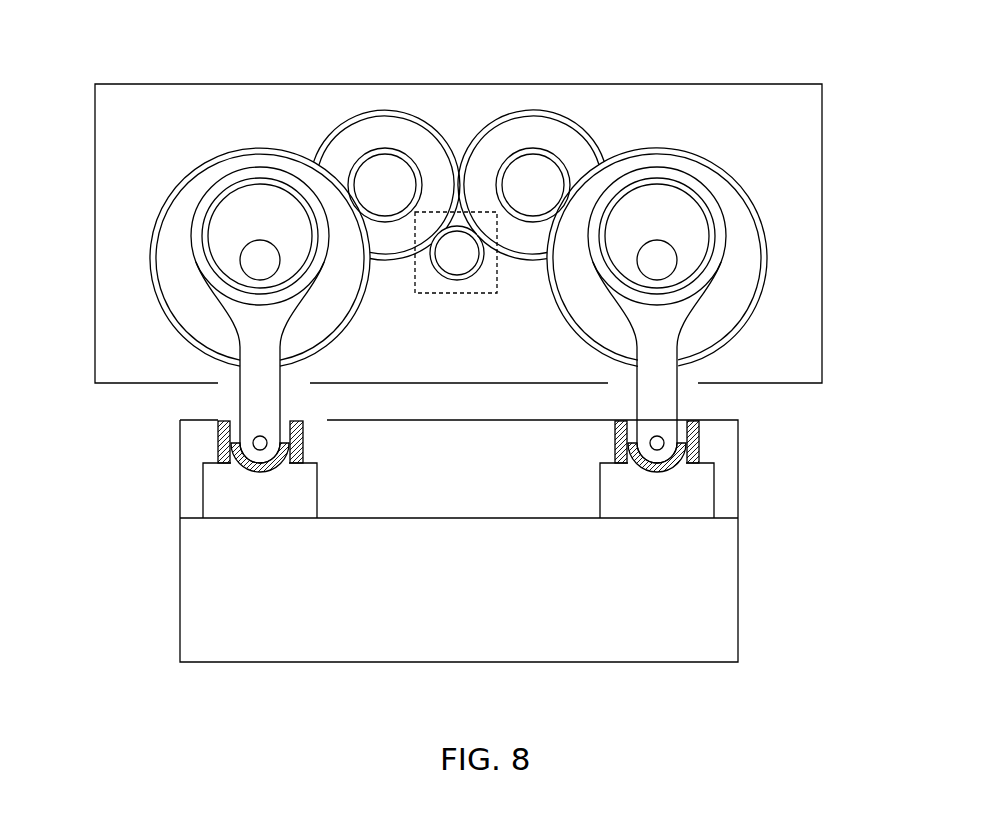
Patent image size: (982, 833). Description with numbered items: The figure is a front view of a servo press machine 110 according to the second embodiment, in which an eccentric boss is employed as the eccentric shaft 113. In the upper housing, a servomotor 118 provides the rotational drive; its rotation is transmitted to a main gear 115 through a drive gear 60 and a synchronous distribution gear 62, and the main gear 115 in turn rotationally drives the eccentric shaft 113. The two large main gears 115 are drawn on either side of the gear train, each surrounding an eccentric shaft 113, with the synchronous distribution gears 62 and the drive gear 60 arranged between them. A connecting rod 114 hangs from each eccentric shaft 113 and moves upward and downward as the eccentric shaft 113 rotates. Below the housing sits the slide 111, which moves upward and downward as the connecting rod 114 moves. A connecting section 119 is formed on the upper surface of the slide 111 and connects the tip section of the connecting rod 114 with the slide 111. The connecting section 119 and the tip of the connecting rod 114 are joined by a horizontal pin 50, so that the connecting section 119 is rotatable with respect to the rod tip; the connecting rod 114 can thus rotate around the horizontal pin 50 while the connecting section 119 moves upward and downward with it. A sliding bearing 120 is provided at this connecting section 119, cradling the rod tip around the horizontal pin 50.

The servo press machine 110 is at (675, 75).
The synchronous distribution gear 62 is at (320, 133).
The main gear 115 is at (158, 226).
The connecting rod 114 is at (257, 340).
The eccentric shaft 113 is at (243, 213).
The drive gear 60 is at (445, 280).
The servomotor 118 is at (494, 294).
The slide 111 is at (195, 498).
The connecting section 119 is at (210, 423).
The sliding bearing 120 is at (225, 460).
The horizontal pin 50 is at (220, 443).